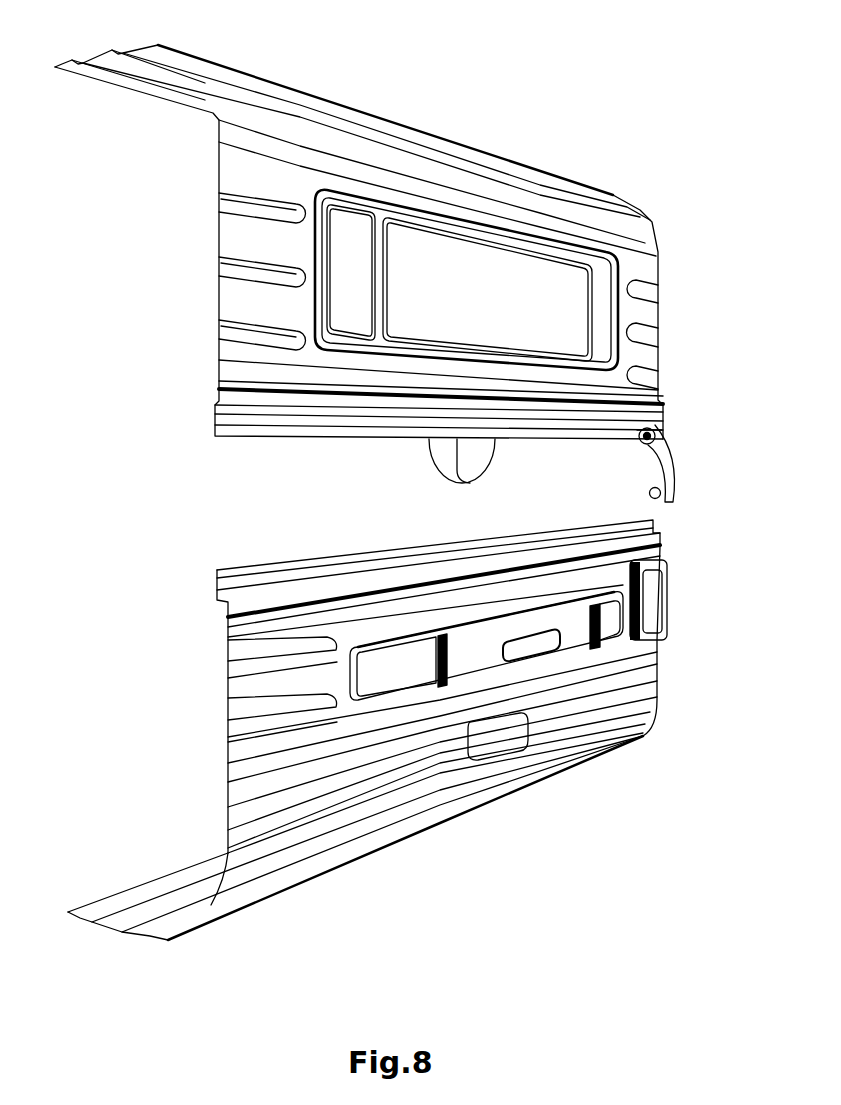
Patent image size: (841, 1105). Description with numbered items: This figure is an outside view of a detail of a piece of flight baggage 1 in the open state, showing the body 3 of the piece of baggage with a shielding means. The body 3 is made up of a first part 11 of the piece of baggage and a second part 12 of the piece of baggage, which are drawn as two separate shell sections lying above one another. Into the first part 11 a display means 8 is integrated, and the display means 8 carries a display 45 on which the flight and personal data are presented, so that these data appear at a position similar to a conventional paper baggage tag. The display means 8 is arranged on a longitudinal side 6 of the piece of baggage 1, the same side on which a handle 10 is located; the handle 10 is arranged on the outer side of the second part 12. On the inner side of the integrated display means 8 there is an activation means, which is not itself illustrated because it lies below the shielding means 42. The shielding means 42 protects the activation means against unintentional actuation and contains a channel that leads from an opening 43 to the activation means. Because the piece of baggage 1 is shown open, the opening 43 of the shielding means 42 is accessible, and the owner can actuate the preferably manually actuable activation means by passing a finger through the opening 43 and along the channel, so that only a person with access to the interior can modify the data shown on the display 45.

The piece of baggage 1 is at (523, 111).
The body of the piece of baggage 3 is at (658, 193).
The longitudinal side 6 is at (712, 372).
The display means 8 is at (590, 246).
The handle 10 is at (573, 635).
The first part of the piece of baggage 11 is at (250, 241).
The second part of the piece of baggage 12 is at (268, 695).
The shielding means 42 is at (418, 467).
The opening 43 is at (480, 452).
The display 45 is at (550, 315).